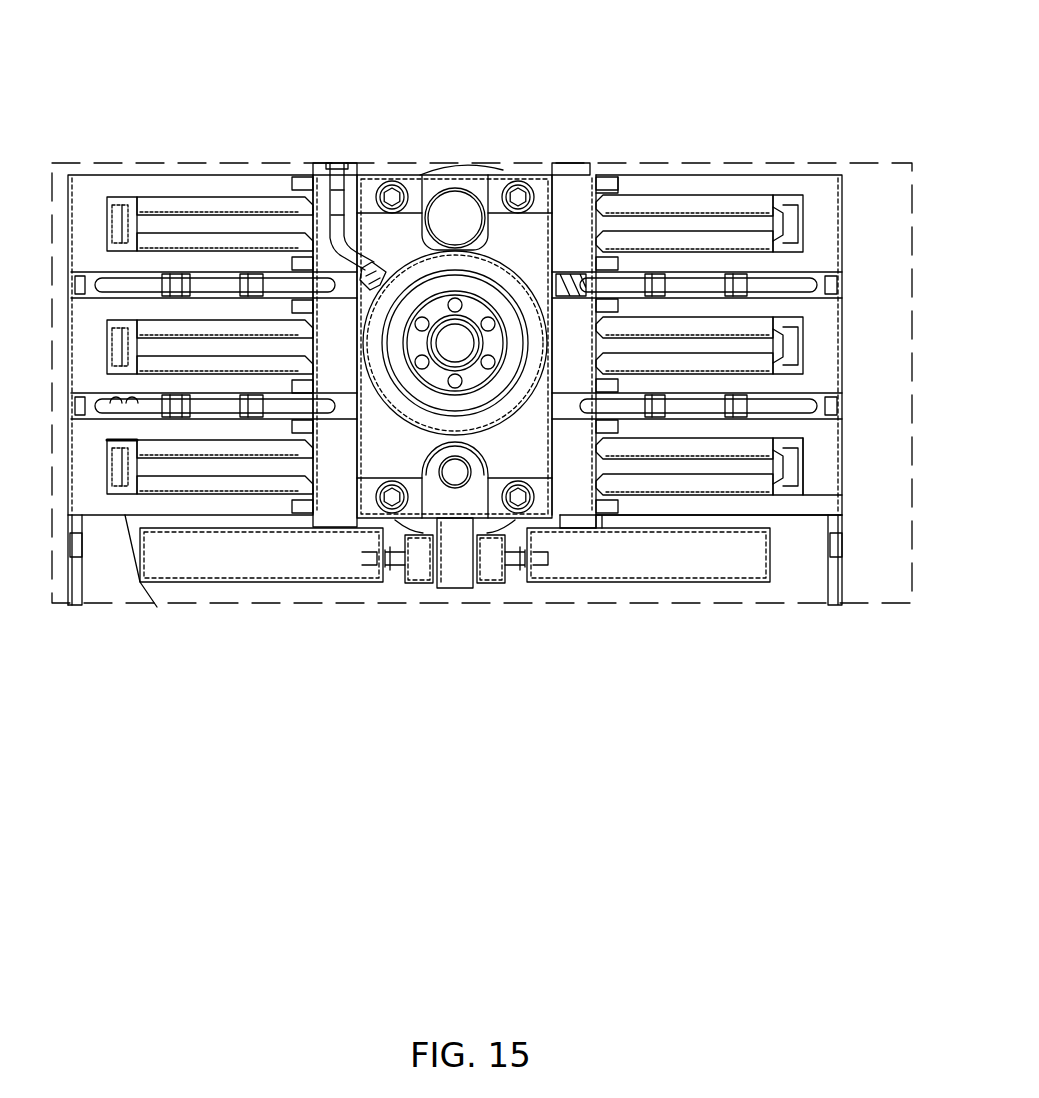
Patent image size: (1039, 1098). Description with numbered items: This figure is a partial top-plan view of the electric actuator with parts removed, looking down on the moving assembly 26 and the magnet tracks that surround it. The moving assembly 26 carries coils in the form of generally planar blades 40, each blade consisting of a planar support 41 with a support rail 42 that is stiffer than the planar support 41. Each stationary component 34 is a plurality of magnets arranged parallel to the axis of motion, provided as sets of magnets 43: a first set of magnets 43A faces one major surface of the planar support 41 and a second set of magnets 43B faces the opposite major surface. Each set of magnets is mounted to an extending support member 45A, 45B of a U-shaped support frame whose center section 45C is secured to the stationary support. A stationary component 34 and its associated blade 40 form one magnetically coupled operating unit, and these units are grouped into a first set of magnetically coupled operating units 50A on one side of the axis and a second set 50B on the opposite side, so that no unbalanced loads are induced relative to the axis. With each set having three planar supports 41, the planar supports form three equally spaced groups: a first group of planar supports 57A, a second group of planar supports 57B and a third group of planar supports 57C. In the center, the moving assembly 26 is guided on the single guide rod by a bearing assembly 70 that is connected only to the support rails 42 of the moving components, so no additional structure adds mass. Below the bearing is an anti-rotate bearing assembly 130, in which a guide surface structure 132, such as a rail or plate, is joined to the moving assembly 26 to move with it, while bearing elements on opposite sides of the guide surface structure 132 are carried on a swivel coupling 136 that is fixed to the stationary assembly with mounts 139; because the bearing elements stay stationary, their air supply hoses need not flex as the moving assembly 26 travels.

The moving assembly 26 is at (497, 163).
The stationary component 34 is at (843, 163).
The blade 40 is at (688, 495).
The planar support 41 is at (738, 222).
The support rail 42 is at (567, 193).
The set of magnets 43 is at (802, 163).
The first set of magnets 43A is at (637, 243).
The second set of magnets 43B is at (673, 207).
The extending support member 45A is at (715, 428).
The extending support member 45B is at (765, 477).
The center section 45C is at (822, 487).
The first set of magnetically coupled operating units 50A is at (722, 163).
The second set of magnetically coupled operating units 50B is at (187, 163).
The planar supports 57A is at (122, 222).
The planar supports 57B is at (120, 352).
The planar supports 57C is at (122, 467).
The bearing assembly 70 is at (383, 245).
The anti-rotate bearing assembly 130 is at (428, 603).
The guide surface structure 132 is at (462, 590).
The swivel coupling 136 is at (407, 580).
The mount 139 is at (222, 555).